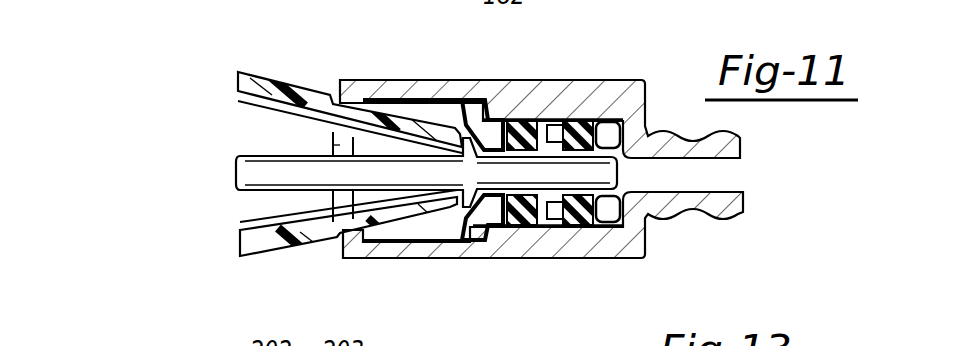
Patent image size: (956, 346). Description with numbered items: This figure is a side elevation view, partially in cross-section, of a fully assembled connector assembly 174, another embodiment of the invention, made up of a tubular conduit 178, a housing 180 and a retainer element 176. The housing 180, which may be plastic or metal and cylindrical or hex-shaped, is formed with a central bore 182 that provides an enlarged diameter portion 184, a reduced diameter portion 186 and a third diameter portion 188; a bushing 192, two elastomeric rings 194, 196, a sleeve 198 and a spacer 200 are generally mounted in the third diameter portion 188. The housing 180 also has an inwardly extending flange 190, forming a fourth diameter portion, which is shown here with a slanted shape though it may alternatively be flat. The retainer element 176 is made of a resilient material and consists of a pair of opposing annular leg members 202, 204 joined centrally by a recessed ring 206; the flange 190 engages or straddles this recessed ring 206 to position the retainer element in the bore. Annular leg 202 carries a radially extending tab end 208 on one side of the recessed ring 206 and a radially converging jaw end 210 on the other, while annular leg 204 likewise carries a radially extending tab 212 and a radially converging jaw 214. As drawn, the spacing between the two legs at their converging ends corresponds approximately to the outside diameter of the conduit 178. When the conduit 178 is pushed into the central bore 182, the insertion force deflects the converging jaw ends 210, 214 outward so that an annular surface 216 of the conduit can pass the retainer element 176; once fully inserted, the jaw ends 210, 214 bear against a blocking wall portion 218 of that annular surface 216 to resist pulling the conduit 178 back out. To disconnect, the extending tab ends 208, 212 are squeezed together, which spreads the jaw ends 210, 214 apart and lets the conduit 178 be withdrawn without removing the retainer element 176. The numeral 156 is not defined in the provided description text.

The coupling body 156 is at (420, 11).
The connector assembly 174 is at (200, 156).
The retainer element 176 is at (317, 85).
The tubular conduit 178 is at (247, 152).
The housing 180 is at (607, 78).
The central bore 182 is at (744, 181).
The enlarged diameter portion 184 is at (413, 99).
The reduced diameter portion 186 is at (677, 160).
The third diameter portion 188 is at (583, 226).
The inwardly extending flange 190 is at (343, 258).
The bushing 192 is at (500, 228).
The elastomeric ring 194 is at (530, 226).
The elastomeric ring 196 is at (631, 258).
The sleeve 198 is at (553, 122).
The spacer 200 is at (650, 213).
The annular leg member 202 is at (238, 72).
The annular leg member 204 is at (243, 257).
The recessed ring 206 is at (333, 141).
The radially extending tab end 208 is at (268, 92).
The radially converging jaw end 210 is at (395, 97).
The radially extending tab 212 is at (293, 247).
The radially converging jaw 214 is at (417, 245).
The annular surface 216 is at (453, 232).
The blocking wall portion 218 is at (480, 171).